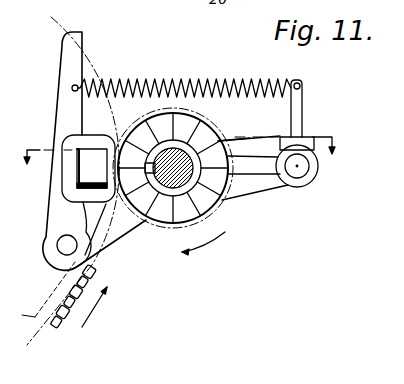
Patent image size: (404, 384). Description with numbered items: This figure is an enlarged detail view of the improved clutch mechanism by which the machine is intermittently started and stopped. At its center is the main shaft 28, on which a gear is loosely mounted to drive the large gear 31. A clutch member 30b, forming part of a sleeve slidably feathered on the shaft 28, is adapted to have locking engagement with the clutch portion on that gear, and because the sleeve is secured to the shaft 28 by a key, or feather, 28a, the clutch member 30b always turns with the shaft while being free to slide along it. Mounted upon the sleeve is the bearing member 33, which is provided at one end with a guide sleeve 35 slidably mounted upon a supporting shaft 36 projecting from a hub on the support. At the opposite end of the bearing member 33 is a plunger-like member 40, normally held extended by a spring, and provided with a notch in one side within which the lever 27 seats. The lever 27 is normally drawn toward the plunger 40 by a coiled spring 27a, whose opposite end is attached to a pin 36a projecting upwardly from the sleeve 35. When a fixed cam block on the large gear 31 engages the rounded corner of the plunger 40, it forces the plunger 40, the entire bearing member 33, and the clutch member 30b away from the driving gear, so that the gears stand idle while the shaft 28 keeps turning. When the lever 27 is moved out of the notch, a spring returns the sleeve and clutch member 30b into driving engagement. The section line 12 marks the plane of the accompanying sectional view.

The section line 12- 12 is at (182, 147).
The lever 27 is at (72, 88).
The coiled spring 27a is at (173, 72).
The main shaft 28 is at (180, 175).
The key, or feather 28a is at (148, 142).
The clutch member 30b is at (203, 141).
The large gear 31 is at (65, 290).
The bearing member 33 is at (70, 180).
The guide sleeve 35 is at (313, 176).
The supporting shaft 36 is at (299, 165).
The pin 36a is at (298, 108).
The plunger-like member 40 is at (92, 168).